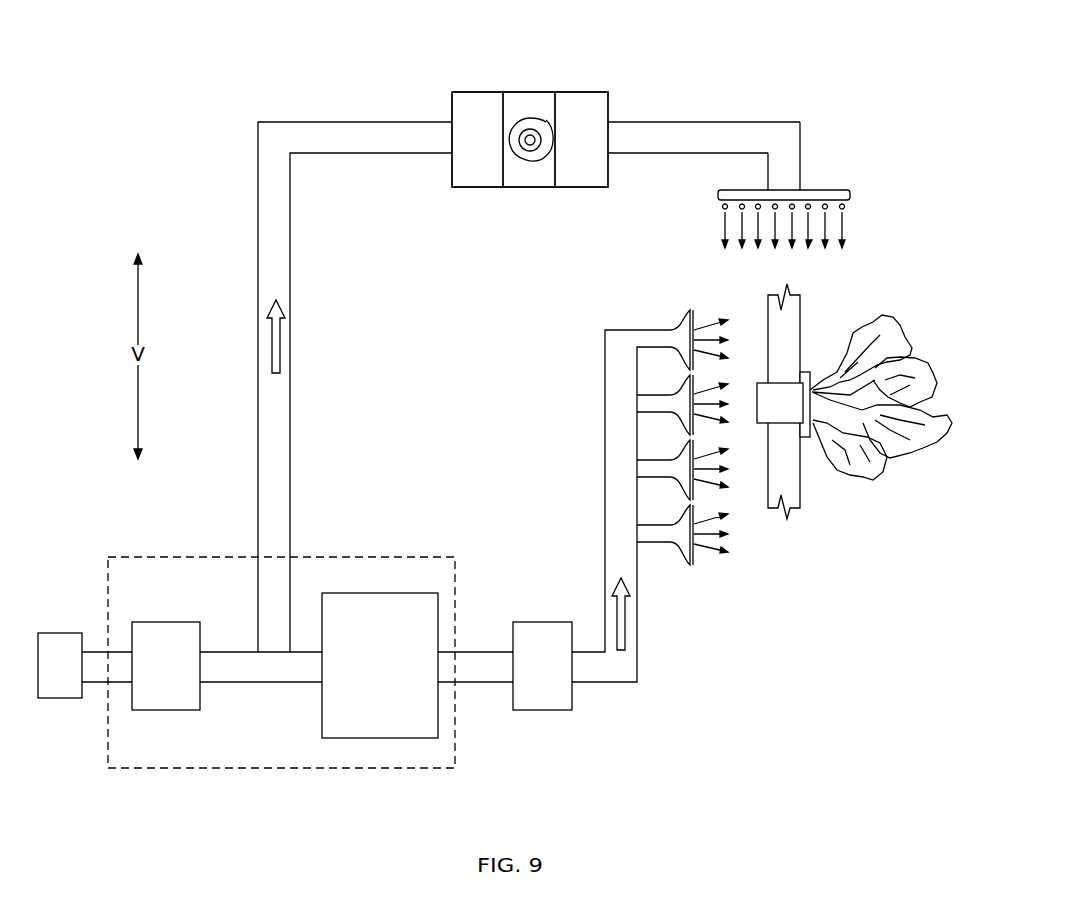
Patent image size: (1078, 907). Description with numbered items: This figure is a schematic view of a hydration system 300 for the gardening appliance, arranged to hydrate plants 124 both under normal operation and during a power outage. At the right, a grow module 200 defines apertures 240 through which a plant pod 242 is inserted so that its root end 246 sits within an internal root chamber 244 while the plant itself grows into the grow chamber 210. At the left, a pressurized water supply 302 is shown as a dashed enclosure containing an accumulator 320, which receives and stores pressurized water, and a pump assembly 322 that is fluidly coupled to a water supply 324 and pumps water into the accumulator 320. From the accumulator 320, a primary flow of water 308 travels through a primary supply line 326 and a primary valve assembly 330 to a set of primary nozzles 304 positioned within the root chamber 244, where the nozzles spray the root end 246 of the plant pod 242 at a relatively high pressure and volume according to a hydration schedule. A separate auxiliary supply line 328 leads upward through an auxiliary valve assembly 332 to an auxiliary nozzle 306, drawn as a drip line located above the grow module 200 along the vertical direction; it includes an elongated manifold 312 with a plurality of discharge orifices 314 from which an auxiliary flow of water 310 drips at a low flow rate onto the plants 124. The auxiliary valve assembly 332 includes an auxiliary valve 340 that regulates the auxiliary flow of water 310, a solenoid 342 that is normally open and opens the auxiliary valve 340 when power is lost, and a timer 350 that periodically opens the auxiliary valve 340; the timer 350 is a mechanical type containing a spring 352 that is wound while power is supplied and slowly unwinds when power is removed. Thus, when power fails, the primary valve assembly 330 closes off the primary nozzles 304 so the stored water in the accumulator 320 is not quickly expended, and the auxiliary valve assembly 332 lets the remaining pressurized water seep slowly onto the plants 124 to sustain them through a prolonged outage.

The hydration system 300 is at (224, 62).
The pressurized water supply 302 is at (422, 556).
The primary nozzles 304 is at (690, 310).
The auxiliary nozzle 306 is at (777, 176).
The primary flow of water 308 is at (708, 487).
The auxiliary flow of water 310 is at (280, 343).
The elongated manifold 312 is at (812, 190).
The discharge orifices 314 is at (720, 207).
The accumulator 320 is at (364, 677).
The pump assembly 322 is at (150, 677).
The water supply 324 is at (44, 677).
The primary supply line 326 is at (588, 683).
The auxiliary supply line 328 is at (290, 450).
The primary valve assembly 330 is at (526, 677).
The auxiliary valve assembly 332 is at (561, 93).
The auxiliary valve 340 is at (567, 152).
The solenoid 342 is at (462, 152).
The timer 350 is at (532, 93).
The spring 352 is at (529, 118).
The grow module 200 is at (800, 308).
The apertures 240 is at (795, 367).
The plant pod 242 is at (765, 415).
The root chamber 244 is at (729, 460).
The root end 246 is at (757, 358).
The plants 124 is at (912, 336).
The grow chamber 210 is at (909, 509).